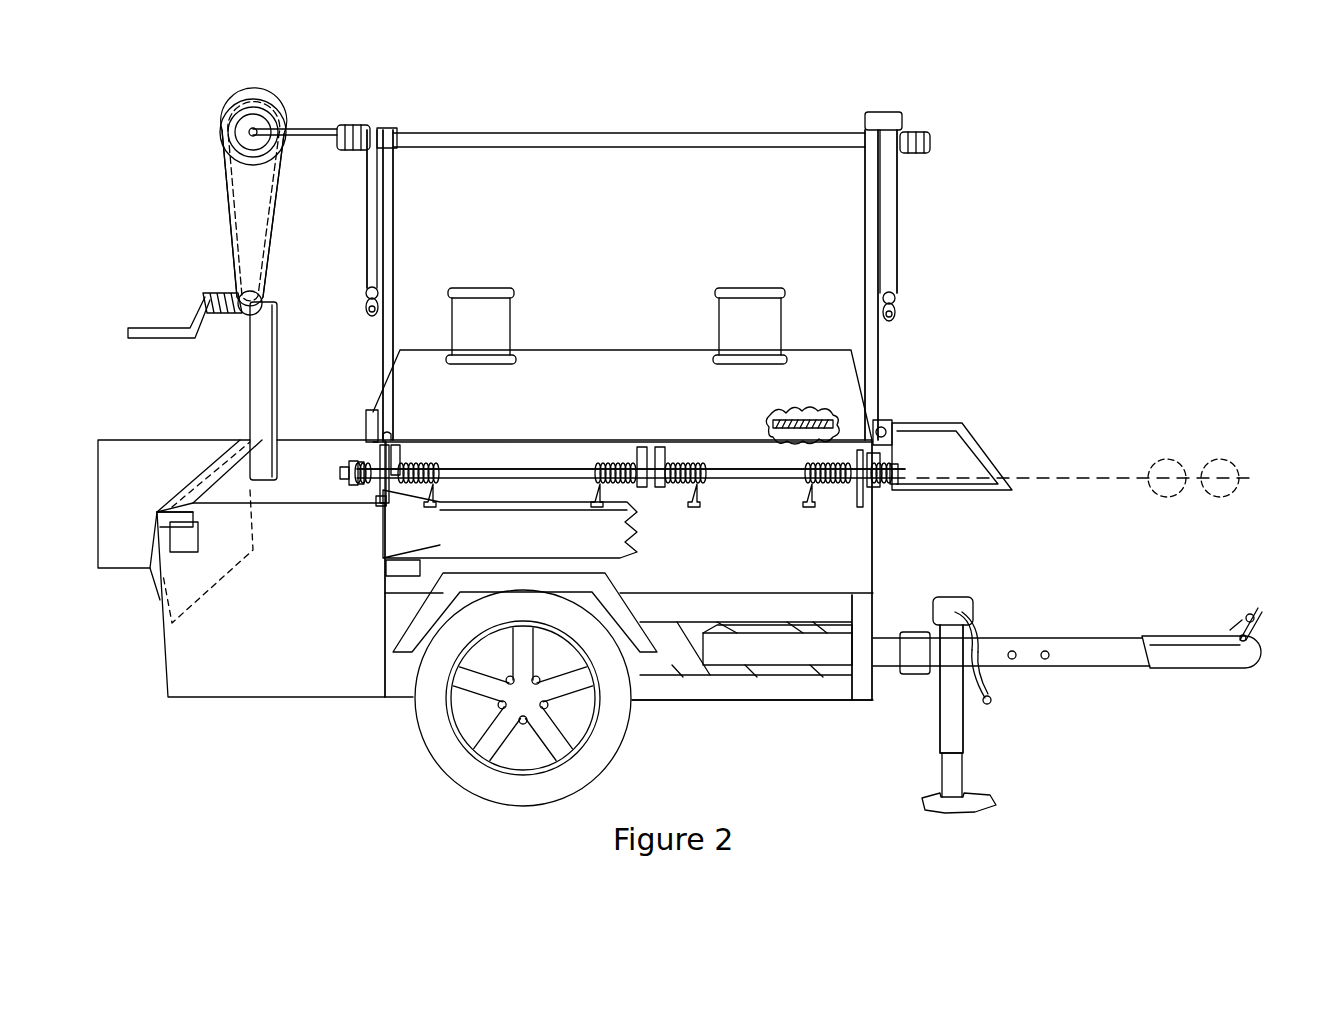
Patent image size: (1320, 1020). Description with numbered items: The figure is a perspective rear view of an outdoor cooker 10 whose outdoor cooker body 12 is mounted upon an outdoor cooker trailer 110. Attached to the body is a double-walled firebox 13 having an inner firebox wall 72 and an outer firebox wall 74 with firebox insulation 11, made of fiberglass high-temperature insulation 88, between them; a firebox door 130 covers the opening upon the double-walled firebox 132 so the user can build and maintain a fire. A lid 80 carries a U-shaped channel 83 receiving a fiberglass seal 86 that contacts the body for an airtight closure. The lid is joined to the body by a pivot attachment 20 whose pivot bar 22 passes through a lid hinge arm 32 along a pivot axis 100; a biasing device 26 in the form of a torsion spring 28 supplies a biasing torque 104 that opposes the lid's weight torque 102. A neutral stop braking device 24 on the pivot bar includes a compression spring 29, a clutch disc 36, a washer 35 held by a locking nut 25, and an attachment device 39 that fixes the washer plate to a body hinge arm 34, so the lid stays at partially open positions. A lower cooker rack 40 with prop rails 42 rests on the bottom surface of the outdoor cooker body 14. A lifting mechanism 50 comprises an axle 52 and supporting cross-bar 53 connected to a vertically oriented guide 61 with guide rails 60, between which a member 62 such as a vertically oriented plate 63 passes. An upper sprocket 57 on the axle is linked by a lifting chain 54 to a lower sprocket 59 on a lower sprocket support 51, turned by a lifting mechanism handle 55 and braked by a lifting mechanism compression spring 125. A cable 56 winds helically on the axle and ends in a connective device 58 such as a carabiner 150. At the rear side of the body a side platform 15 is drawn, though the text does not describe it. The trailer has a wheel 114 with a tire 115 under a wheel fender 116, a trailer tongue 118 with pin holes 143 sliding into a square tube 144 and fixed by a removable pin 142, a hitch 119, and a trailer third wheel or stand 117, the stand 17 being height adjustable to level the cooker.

The outdoor cooker 10 is at (1085, 140).
The firebox insulation 11 is at (206, 533).
The outdoor cooker body 12 is at (888, 565).
The double-walled firebox 13 is at (182, 483).
The bottom surface of the outdoor cooker body 14 is at (270, 690).
The side platform 15 is at (975, 430).
The stand 17 is at (875, 688).
The pivot attachment 20 is at (710, 508).
The pivot bar 22 is at (493, 480).
The neutral stop braking device 24 is at (350, 485).
The locking nut 25 is at (338, 472).
The biasing device 26 is at (594, 500).
The torsion spring 28 is at (560, 466).
The compression spring 29 is at (374, 500).
The lid hinge arm 32 is at (400, 456).
The body hinge arm 34 is at (382, 508).
The washer 35 is at (350, 462).
The clutch disc 36 is at (373, 441).
The attachment device 39 is at (389, 426).
The lower cooker rack 40 is at (630, 558).
The prop rails 42 is at (386, 568).
The lifting mechanism 50 is at (190, 128).
The lower sprocket support 51 is at (256, 388).
The axle 52 is at (622, 132).
The supporting cross-bar 53 is at (626, 158).
The lifting chain 54 is at (228, 232).
The lifting mechanism handle 55 is at (150, 327).
The cable 56 is at (366, 192).
The upper sprocket 57 is at (222, 152).
The connective device 58 is at (366, 308).
The lower sprocket 59 is at (243, 318).
The guide rails 60 is at (382, 232).
The vertically oriented guide 61 is at (347, 262).
The member 62 is at (366, 418).
The vertically oriented plate 63 is at (347, 384).
The inner firebox wall 72 is at (158, 508).
The outer firebox wall 74 is at (146, 564).
The lid 80 is at (692, 348).
The U-shaped channel 83 is at (788, 414).
The fiberglass seal 86 is at (773, 424).
The fiberglass high-temperature insulation 88 is at (155, 590).
The pivot axis 100 is at (1112, 476).
The weight torque 102 is at (1227, 464).
The biasing torque 104 is at (1183, 461).
The outdoor cooker trailer 110 is at (822, 745).
The wheel 114 is at (468, 735).
The tire 115 is at (610, 756).
The wheel fender 116 is at (705, 650).
The trailer third wheel or stand 117 is at (968, 752).
The trailer tongue 118 is at (1063, 666).
The hitch 119 is at (1256, 666).
The lifting mechanism compression spring 125 is at (207, 293).
The firebox door 130 is at (118, 441).
The opening upon the double-walled firebox 132 is at (202, 590).
The removable pin 142 is at (985, 668).
The pin holes 143 is at (1045, 651).
The square tube 144 is at (975, 633).
The carabiner 150 is at (366, 294).